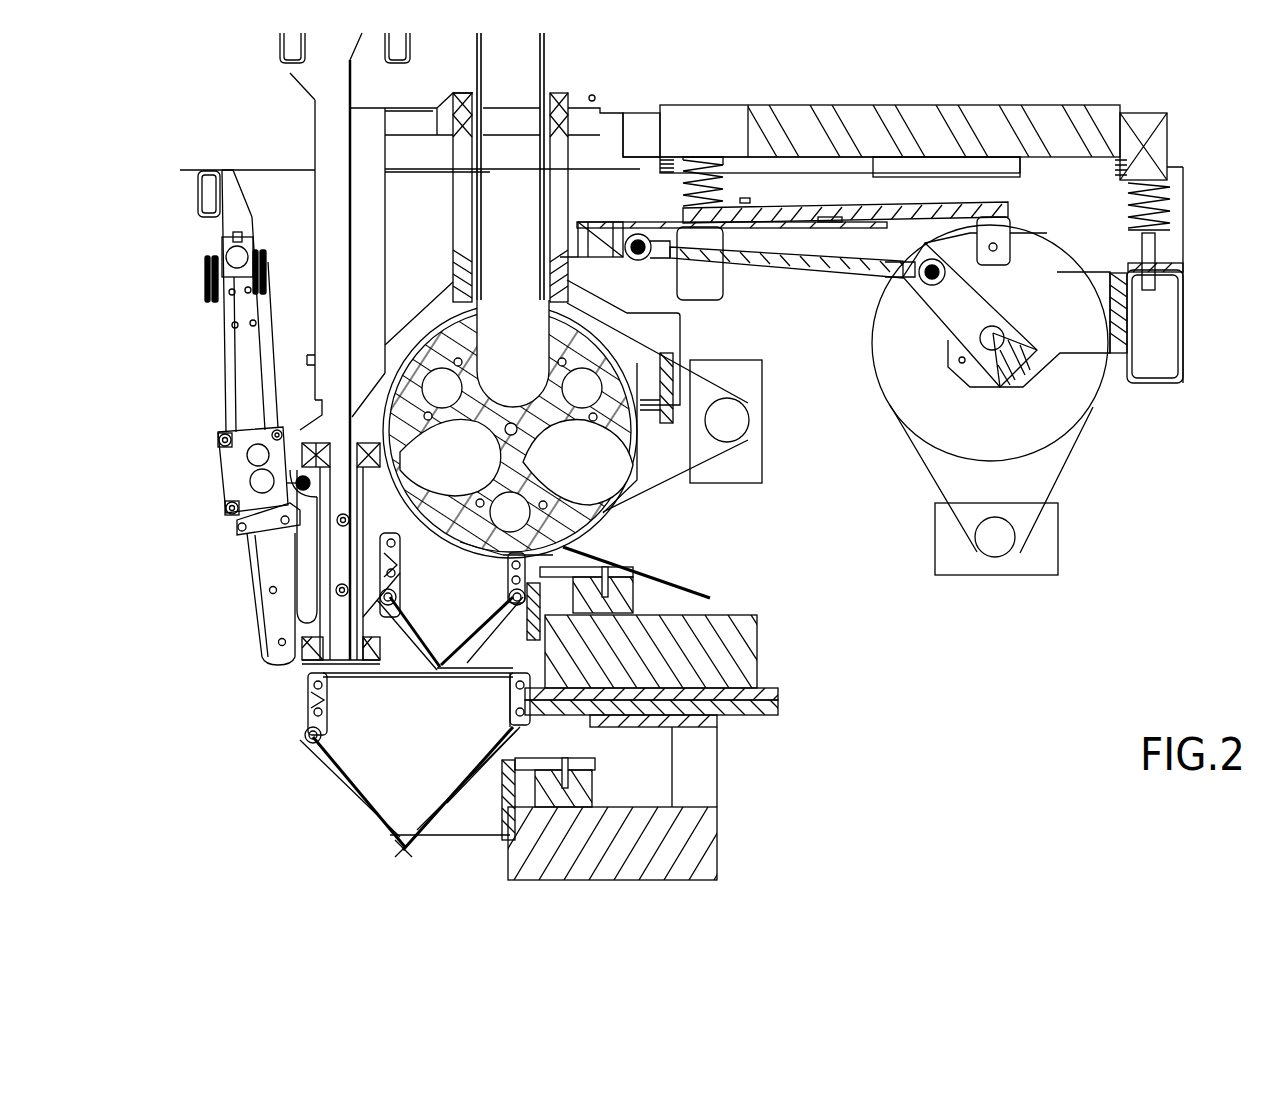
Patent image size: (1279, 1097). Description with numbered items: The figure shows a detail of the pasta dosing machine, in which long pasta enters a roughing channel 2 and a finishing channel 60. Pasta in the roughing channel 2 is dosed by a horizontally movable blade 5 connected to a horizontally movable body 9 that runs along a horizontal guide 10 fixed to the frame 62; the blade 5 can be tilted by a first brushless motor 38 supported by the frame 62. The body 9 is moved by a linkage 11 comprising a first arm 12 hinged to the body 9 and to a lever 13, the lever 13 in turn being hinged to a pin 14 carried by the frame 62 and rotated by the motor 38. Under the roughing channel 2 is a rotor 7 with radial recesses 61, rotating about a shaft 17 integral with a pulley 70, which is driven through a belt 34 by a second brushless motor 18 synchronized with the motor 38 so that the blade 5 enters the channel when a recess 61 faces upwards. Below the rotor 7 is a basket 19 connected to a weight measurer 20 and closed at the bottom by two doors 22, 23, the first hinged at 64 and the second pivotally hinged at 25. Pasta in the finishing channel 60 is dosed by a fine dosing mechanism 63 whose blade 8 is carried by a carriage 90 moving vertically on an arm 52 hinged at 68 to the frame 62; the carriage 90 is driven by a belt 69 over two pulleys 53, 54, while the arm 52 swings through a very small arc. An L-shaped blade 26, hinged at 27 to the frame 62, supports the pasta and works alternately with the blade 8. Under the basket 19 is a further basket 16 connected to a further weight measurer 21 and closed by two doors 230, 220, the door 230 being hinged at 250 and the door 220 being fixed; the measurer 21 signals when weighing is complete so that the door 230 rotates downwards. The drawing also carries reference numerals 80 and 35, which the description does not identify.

The roughing channel 2 is at (510, 82).
The horizontally movable blade 5 is at (517, 262).
The rotor 7 is at (447, 305).
The blade 8 is at (347, 557).
The horizontally movable body 9 is at (600, 226).
The horizontal guide 10 is at (812, 214).
The linkage 11 is at (823, 312).
The first arm 12 is at (793, 262).
The lever 13 is at (967, 305).
The pin 14 is at (995, 335).
The further basket 16 is at (396, 760).
The shaft 17 is at (517, 432).
The second brushless motor 18 is at (750, 460).
The basket 19 is at (436, 603).
The weight measurer 20 is at (645, 612).
The further weight measurer 21 is at (612, 798).
The door 22 is at (477, 625).
The door 23 is at (413, 617).
The hinge 25 is at (305, 665).
The L-shaped blade 26 is at (307, 607).
The hinge 27 is at (245, 517).
The belt 34 is at (665, 487).
The belt 35 is at (1053, 480).
The first motor 38 is at (1042, 548).
The arm 52 is at (245, 360).
The pulley 53 is at (205, 283).
The pulley 54 is at (257, 262).
The finishing channel 60 is at (337, 222).
The radial recesses 61 is at (498, 385).
The fixed frame 62 is at (1140, 323).
The fine dosing mechanism 63 is at (165, 433).
The hinge 64 is at (600, 557).
The hinge 68 is at (237, 249).
The belt 69 is at (220, 330).
The pulley 70 is at (529, 409).
The wheel 80 is at (1047, 443).
The carriage 90 is at (240, 467).
The door 220 is at (395, 840).
The door 230 is at (360, 792).
The hinge 250 is at (305, 742).